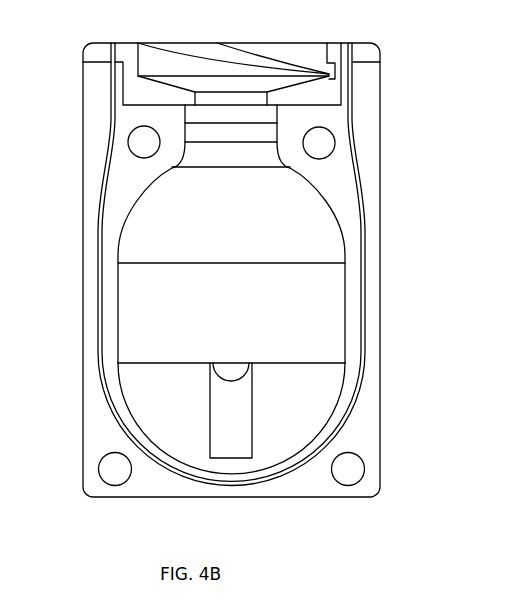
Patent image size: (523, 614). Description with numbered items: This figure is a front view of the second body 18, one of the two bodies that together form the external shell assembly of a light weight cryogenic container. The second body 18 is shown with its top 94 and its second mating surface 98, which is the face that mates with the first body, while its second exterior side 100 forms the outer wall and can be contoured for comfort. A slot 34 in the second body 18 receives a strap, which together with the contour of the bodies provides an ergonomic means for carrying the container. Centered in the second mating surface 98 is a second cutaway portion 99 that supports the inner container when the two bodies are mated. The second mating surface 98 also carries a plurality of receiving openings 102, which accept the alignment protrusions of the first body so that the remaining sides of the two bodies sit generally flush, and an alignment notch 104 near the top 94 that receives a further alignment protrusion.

The second body 18 is at (239, 292).
The slot 34 is at (101, 186).
The top 94 is at (131, 42).
The second mating surface 98 is at (373, 259).
The second cutaway portion 99 is at (118, 251).
The second exterior side 100 is at (239, 252).
The receiving openings 102 is at (140, 141).
The alignment notch 104 is at (338, 52).